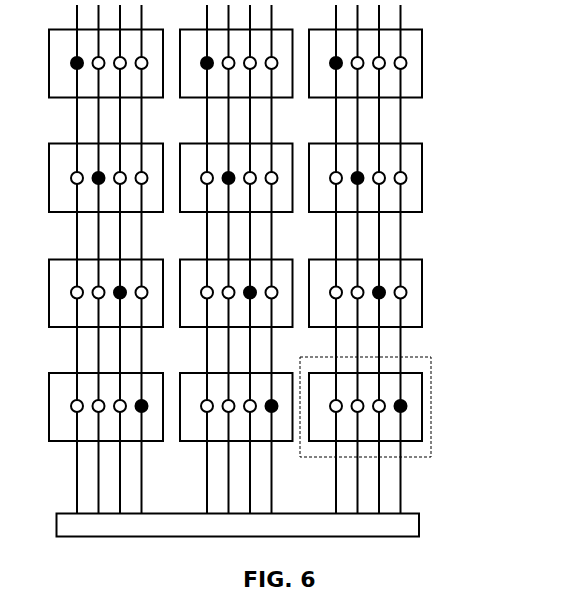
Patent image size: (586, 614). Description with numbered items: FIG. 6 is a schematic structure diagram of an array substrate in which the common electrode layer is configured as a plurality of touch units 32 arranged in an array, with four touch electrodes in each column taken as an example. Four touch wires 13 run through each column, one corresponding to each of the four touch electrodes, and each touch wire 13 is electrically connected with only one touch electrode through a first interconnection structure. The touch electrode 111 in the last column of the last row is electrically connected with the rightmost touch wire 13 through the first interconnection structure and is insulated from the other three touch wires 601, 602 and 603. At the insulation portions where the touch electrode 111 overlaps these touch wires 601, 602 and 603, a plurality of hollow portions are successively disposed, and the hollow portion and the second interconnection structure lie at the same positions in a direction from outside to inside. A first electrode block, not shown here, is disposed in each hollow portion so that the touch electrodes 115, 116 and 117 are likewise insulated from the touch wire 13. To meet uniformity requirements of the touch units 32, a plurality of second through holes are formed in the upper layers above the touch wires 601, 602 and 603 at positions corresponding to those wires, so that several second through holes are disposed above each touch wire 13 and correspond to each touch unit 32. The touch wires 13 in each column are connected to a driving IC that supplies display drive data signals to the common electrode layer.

The touch wire 13 is at (402, 496).
The touch unit 32 is at (431, 385).
The touch electrode 111 is at (415, 404).
The touch electrode 115 is at (410, 292).
The touch electrode 116 is at (410, 172).
The touch electrode 117 is at (410, 55).
The touch wire 601 is at (380, 344).
The touch wire 602 is at (360, 232).
The touch wire 603 is at (337, 118).